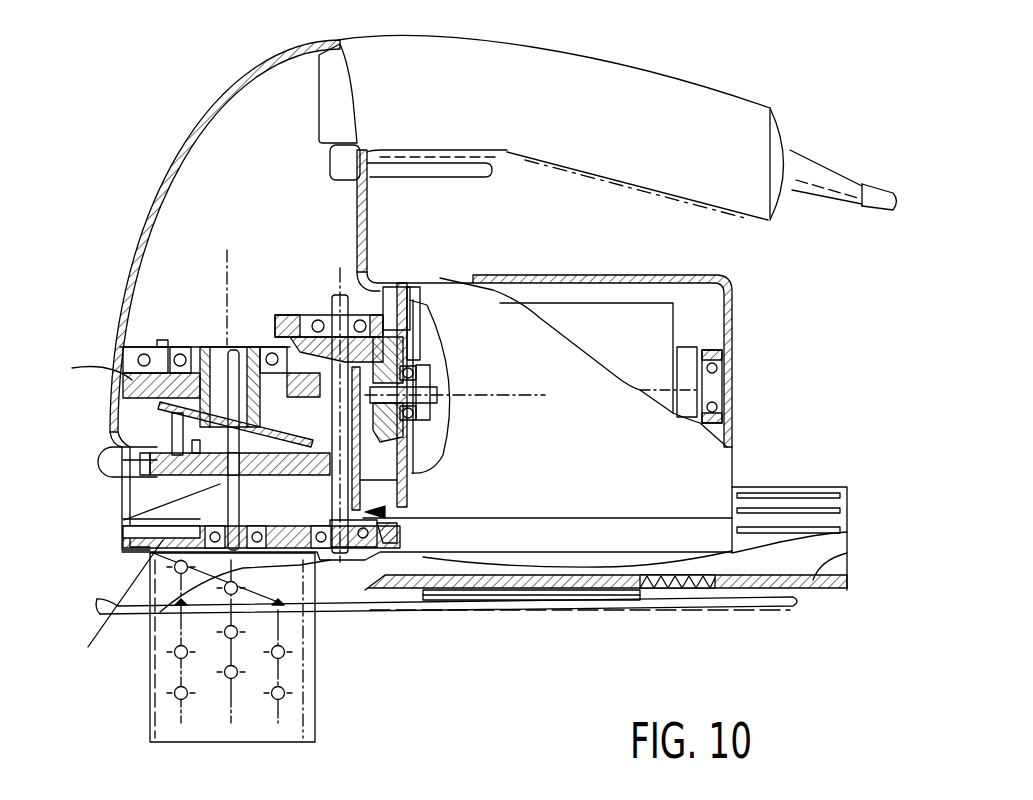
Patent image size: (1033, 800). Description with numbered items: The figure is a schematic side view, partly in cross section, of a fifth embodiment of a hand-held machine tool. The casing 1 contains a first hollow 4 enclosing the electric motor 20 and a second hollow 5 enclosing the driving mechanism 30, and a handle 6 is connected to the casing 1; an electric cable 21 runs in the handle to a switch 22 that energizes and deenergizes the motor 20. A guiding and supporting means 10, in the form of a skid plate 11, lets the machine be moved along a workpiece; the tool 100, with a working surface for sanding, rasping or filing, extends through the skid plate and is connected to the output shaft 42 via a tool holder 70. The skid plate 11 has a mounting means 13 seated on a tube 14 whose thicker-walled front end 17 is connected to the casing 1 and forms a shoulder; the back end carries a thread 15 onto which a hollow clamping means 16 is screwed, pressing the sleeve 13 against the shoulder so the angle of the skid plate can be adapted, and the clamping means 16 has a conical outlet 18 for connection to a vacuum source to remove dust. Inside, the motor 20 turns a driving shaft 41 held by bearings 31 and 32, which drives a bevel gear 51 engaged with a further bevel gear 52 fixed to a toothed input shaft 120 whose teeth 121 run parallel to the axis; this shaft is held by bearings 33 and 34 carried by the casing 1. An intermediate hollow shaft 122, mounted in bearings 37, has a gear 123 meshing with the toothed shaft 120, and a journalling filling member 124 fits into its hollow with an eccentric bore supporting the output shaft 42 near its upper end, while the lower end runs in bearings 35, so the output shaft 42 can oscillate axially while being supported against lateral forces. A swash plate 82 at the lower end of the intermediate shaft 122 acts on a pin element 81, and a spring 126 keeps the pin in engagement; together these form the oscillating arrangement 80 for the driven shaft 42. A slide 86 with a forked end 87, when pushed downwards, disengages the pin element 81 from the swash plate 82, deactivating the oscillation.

The casing 1 is at (193, 142).
The first hollow 4 is at (712, 314).
The second hollow 5 is at (150, 357).
The handle 6 is at (600, 88).
The guiding and supporting means 10 is at (540, 625).
The skid plate 11 is at (357, 614).
The mounting means 13 is at (450, 600).
The tube 14 is at (483, 590).
The thread 15 is at (673, 590).
The clamping means 16 is at (737, 588).
The front end of the tube 17 is at (420, 610).
The conical outlet 18 is at (847, 553).
The electric motor 20 is at (635, 320).
The electric cable 21 is at (870, 198).
The switch 22 is at (450, 172).
The driving mechanism 30 is at (400, 518).
The bearing 31 is at (725, 368).
The bearing 32 is at (412, 413).
The bearing 33 is at (390, 530).
The bearing 34 is at (312, 318).
The bearing 35 is at (262, 530).
The bearing 37 is at (263, 340).
The driving shaft 41 is at (403, 393).
The output shaft 42 is at (127, 509).
The bevel gear 51 is at (440, 357).
The bevel gear 52 is at (407, 353).
The tool holder 70 is at (178, 553).
The oscillating arrangement 80 is at (100, 345).
The pin element 81 is at (125, 425).
The swash plate 82 is at (157, 407).
The slide 86 is at (110, 485).
The forked end 87 is at (118, 465).
The tool 100 is at (148, 718).
The toothed input shaft 120 is at (340, 293).
The teeth 121 is at (370, 481).
The intermediate hollow shaft 122 is at (190, 337).
The gear 123 is at (147, 387).
The journalling filling member 124 is at (226, 340).
The spring 126 is at (127, 545).